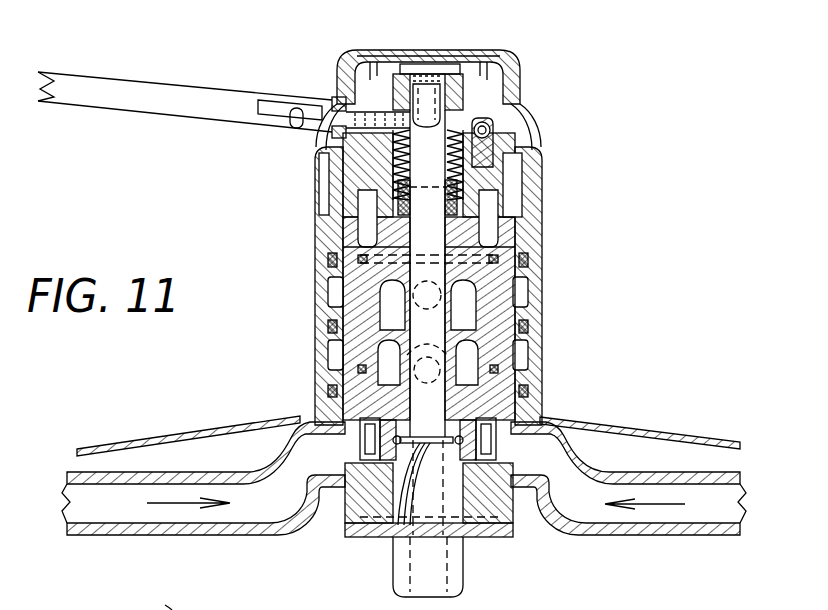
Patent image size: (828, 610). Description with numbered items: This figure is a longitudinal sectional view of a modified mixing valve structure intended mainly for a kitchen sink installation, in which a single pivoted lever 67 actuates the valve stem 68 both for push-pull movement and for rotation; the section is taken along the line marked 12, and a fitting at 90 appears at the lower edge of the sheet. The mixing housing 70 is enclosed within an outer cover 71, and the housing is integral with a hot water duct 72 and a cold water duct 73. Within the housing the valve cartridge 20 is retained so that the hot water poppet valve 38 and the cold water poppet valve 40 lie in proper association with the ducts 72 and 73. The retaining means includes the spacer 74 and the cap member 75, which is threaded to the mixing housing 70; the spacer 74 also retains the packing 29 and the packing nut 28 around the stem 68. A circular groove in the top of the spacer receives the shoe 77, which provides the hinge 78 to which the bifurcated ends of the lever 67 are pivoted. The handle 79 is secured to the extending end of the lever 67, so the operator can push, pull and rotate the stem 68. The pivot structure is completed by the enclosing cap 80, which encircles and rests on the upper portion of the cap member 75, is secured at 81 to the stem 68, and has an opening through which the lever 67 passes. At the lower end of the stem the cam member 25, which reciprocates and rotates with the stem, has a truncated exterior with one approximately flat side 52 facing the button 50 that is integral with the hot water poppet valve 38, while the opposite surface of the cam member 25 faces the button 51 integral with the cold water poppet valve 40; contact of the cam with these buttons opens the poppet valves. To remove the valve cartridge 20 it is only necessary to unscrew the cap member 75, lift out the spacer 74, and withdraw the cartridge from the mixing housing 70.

The section line 12- 12 is at (258, 182).
The valve cartridge 20 is at (482, 391).
The cam member 25 is at (436, 492).
The packing nut 28 is at (400, 174).
The packing 29 is at (403, 205).
The hot water poppet valve 38 is at (490, 458).
The cold water poppet valve 40 is at (378, 458).
The button 50 is at (462, 438).
The button 51 is at (394, 440).
The flat side 52 is at (425, 492).
The pivoted lever 67 is at (292, 70).
The valve stem 68 is at (420, 268).
The mixing housing 70 is at (514, 303).
The outer cover 71 is at (542, 347).
The hot water duct 72 is at (667, 528).
The cold water duct 73 is at (145, 528).
The spacer 74 is at (540, 240).
The cap member 75 is at (512, 190).
The shoe 77 is at (500, 160).
The hinge 78 is at (484, 124).
The handle 79 is at (84, 90).
The enclosing cap 80 is at (347, 72).
The securing point 81 is at (420, 66).
The fitting 90 is at (168, 609).